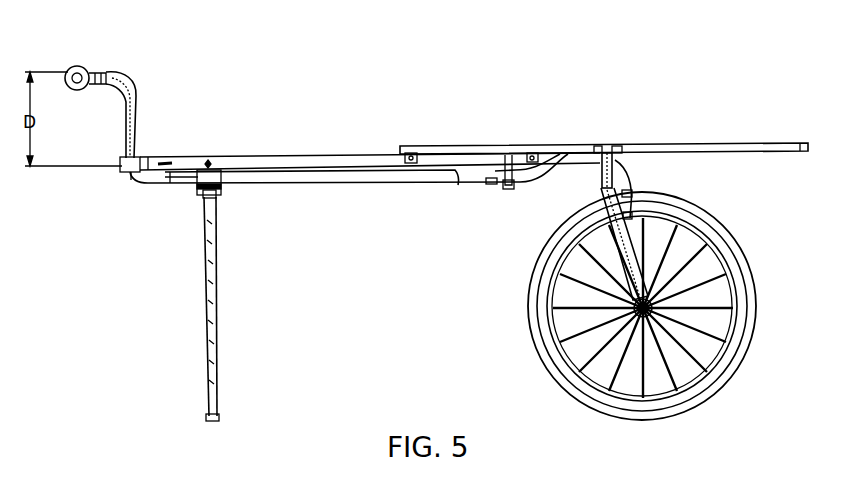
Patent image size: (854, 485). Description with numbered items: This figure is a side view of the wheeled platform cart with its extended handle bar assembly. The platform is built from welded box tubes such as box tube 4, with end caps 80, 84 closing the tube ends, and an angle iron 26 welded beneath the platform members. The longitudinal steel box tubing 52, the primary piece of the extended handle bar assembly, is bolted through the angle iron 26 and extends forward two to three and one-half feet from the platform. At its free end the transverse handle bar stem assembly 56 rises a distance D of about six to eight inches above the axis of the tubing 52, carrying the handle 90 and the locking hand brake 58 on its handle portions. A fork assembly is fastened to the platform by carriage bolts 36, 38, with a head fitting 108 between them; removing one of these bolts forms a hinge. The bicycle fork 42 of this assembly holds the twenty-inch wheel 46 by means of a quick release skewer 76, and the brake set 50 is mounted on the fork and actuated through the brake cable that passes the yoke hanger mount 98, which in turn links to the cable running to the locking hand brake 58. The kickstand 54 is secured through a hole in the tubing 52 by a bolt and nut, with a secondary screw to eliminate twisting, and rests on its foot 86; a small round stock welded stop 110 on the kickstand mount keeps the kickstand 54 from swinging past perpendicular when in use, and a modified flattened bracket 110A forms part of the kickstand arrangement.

The box tube 4 is at (745, 145).
The angle iron 26 is at (447, 188).
The carriage bolt 36 is at (620, 146).
The carriage bolt 38 is at (592, 146).
The bicycle fork 42 is at (602, 194).
The wheel 46 is at (718, 382).
The brake set 50 is at (636, 192).
The longitudinal steel box tubing 52 is at (330, 186).
The kickstand 54 is at (218, 228).
The transverse handle bar stem assembly 56 is at (112, 116).
The locking hand brake 58 is at (110, 68).
The quick release skewer 76 is at (692, 273).
The end cap 80 is at (406, 152).
The end cap 84 is at (805, 143).
The kickstand foot 86 is at (220, 416).
The handle 90 is at (78, 66).
The yoke hanger mount 98 is at (492, 190).
The head tube 108 is at (630, 155).
The welded stop 110 is at (200, 197).
The modified flattened bracket 110A is at (175, 178).